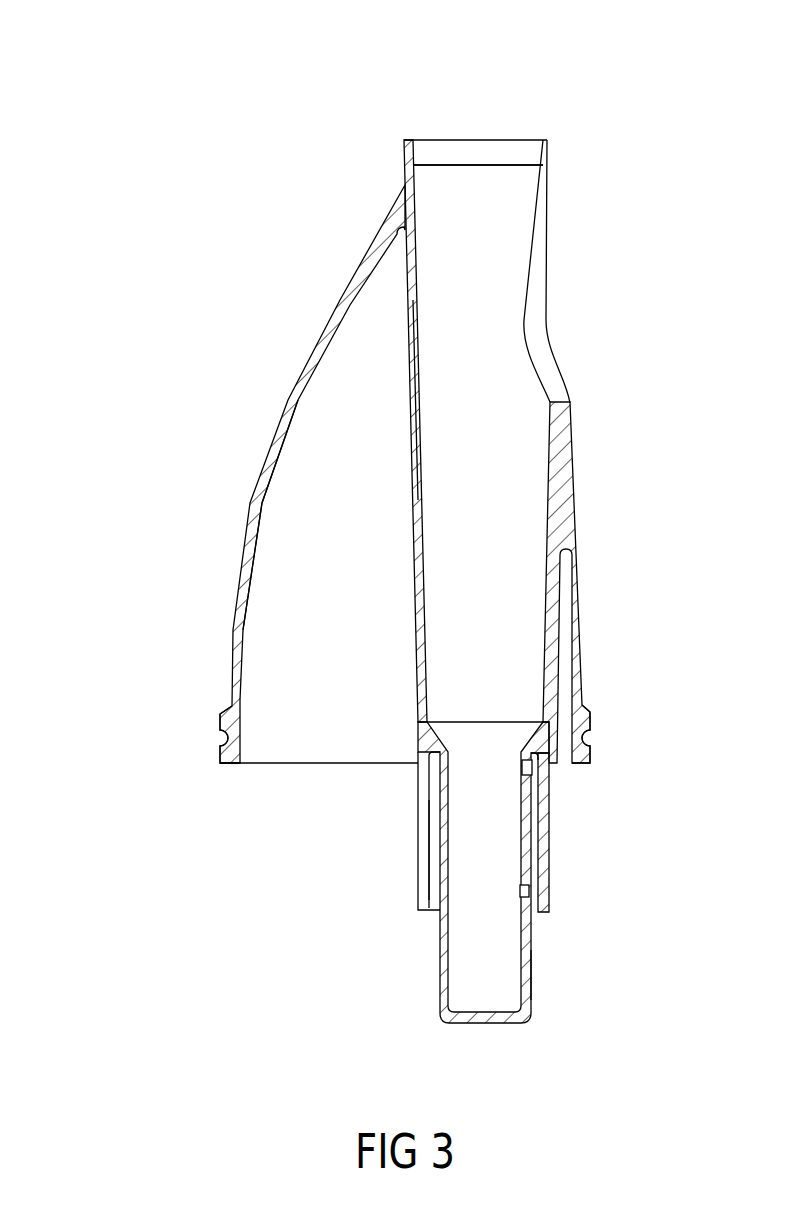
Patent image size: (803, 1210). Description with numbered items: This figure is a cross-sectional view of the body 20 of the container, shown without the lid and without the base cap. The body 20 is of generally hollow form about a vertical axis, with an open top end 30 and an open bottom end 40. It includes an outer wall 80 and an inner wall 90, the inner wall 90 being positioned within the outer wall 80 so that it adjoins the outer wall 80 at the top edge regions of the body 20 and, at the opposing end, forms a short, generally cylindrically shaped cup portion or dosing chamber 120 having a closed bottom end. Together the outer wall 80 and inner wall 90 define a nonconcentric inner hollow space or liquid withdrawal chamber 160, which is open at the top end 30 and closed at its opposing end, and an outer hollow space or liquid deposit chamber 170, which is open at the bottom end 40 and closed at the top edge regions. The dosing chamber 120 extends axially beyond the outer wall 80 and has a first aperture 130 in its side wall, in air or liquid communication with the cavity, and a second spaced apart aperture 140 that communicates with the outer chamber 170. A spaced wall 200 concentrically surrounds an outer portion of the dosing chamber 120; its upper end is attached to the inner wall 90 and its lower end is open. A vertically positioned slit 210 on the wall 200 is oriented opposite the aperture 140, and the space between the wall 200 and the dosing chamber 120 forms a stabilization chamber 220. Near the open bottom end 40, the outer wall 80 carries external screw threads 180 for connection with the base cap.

The open top end 30 is at (493, 137).
The outer wall 80 is at (293, 403).
The inner wall 90 is at (413, 503).
The liquid deposit chamber 170 is at (318, 630).
The external screw threads 180 is at (222, 719).
The open bottom end 40 is at (292, 764).
The body 20 is at (563, 493).
The liquid withdrawal chamber 160 is at (500, 432).
The dosing chamber 120 is at (492, 932).
The spaced wall 200 is at (549, 848).
The slit 210 is at (425, 802).
The stabilization chamber 220 is at (433, 892).
The second aperture 140 is at (532, 768).
The first aperture 130 is at (529, 893).